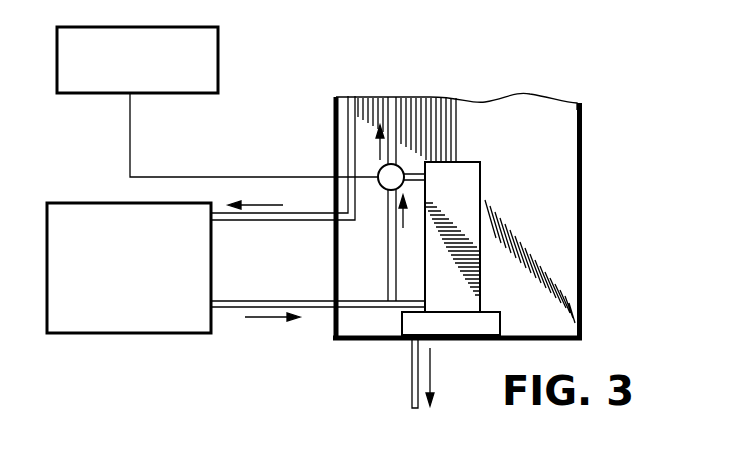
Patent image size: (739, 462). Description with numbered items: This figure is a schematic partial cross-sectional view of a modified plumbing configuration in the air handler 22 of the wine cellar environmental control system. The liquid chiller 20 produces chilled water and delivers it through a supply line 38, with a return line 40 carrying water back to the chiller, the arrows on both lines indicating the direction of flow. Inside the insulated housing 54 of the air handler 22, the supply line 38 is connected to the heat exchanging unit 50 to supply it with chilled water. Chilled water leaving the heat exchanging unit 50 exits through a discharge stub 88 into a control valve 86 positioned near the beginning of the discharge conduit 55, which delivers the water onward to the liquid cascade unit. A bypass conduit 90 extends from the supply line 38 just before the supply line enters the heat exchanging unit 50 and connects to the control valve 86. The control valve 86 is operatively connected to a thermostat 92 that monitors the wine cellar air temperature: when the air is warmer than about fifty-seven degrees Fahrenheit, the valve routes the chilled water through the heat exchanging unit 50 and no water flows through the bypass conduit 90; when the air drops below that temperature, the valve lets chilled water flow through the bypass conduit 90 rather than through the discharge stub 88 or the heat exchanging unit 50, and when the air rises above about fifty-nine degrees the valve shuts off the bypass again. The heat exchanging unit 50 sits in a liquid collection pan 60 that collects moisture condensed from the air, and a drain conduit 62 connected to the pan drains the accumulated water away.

The thermostat 92 is at (219, 41).
The liquid chiller 20 is at (132, 301).
The return line 40 is at (257, 222).
The supply line 38 is at (285, 300).
The bypass conduit 90 is at (388, 265).
The control valve 86 is at (382, 170).
The discharge stub 88 is at (413, 172).
The discharge conduit 55 is at (392, 117).
The air handler 22 is at (584, 116).
The insulated housing 54 is at (583, 195).
The heat exchanging unit 50 is at (482, 194).
The liquid collection pan 60 is at (465, 328).
The drain conduit 62 is at (412, 394).